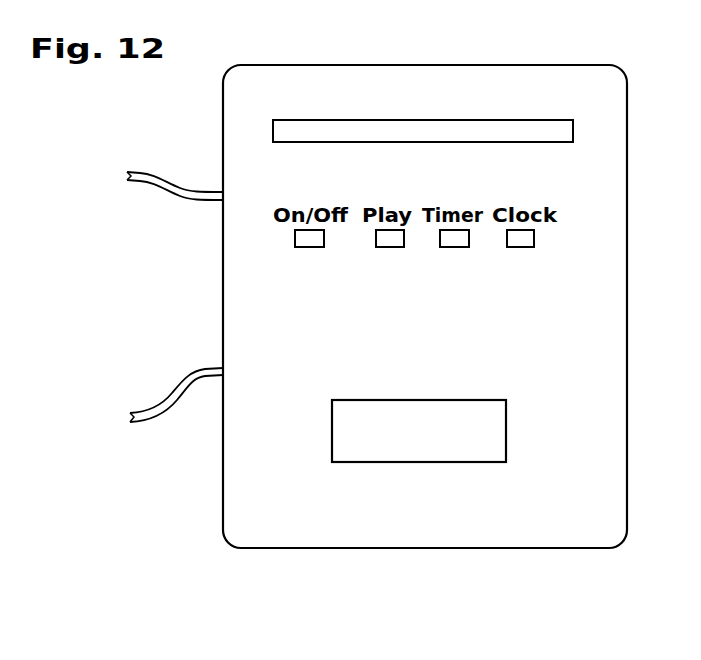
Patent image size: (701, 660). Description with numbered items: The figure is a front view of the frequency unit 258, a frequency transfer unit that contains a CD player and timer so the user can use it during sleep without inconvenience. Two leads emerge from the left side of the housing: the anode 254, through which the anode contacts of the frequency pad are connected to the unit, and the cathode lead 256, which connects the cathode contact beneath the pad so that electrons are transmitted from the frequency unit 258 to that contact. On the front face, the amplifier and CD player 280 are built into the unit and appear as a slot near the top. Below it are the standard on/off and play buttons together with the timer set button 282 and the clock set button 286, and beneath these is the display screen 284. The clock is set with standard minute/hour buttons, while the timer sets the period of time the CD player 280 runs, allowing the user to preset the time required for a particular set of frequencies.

The anode 254 is at (156, 422).
The cathode lead 256 is at (162, 152).
The frequency unit 258 is at (201, 464).
The CD player 280 is at (478, 135).
The timer set button 282 is at (452, 247).
The display screen 284 is at (472, 445).
The clock set button 286 is at (513, 247).